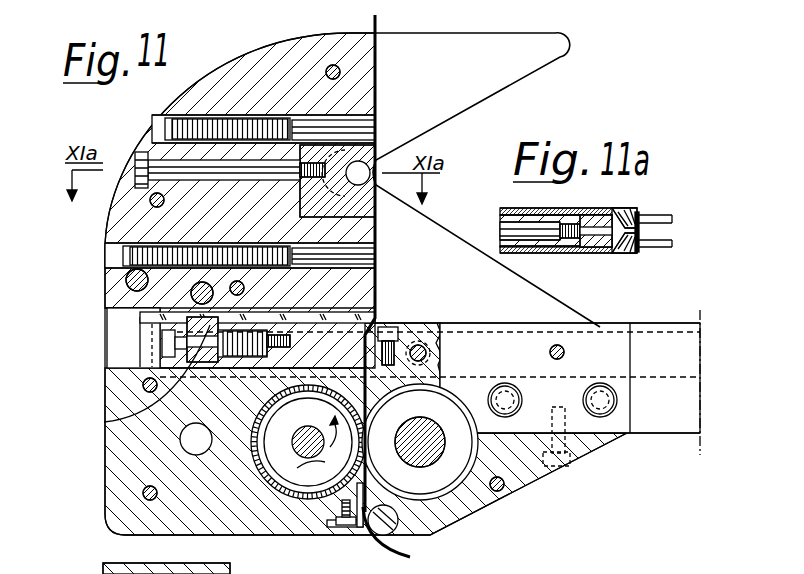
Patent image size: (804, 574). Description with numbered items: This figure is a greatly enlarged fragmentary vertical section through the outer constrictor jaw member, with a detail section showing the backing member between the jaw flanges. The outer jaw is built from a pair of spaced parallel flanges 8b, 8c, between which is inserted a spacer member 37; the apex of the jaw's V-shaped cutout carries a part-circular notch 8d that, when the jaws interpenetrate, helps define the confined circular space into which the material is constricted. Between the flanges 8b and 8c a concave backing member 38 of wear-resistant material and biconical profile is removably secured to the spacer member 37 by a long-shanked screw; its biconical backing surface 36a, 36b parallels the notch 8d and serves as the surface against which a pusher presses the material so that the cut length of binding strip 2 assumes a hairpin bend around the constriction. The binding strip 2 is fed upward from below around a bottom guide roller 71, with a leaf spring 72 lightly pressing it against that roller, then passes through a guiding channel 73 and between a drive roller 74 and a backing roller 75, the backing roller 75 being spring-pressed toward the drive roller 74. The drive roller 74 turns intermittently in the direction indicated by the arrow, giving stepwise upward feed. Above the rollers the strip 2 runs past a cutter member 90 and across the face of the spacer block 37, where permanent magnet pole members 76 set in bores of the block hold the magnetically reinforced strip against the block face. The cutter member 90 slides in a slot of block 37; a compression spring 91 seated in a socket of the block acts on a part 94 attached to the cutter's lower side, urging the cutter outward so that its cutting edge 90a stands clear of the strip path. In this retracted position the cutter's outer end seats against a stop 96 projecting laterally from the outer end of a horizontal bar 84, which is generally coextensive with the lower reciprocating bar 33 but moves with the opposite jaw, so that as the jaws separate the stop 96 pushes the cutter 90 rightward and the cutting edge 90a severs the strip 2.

In FIG. 11, the binding strip 2 is at (378, 20).
In FIG. 11A, the binding strip 2 is at (640, 232).
In FIG. 11A, the flange 8b is at (672, 220).
In FIG. 11A, the flange 8c is at (662, 246).
In FIG. 11, the part-circular notch 8d is at (375, 170).
In FIG. 11, the lower reciprocating bar 33 is at (667, 405).
In FIG. 11A, the biconical backing surface 36a is at (622, 253).
In FIG. 11A, the biconical backing surface 36b is at (622, 214).
In FIG. 11, the spacer member 37 is at (282, 83).
In FIG. 11A, the spacer member 37 is at (538, 240).
In FIG. 11, the concave backing member 38 is at (372, 214).
In FIG. 11A, the concave backing member 38 is at (597, 214).
In FIG. 11, the bottom guide roller 71 is at (393, 521).
In FIG. 11, the leaf spring 72 is at (330, 503).
In FIG. 11, the guiding channel 73 is at (347, 495).
In FIG. 11, the drive roller 74 is at (263, 498).
In FIG. 11, the backing roller 75 is at (506, 505).
In FIG. 11, the permanent magnet pole members 76 is at (350, 130).
In FIG. 11, the horizontal bar 84 is at (690, 377).
In FIG. 11, the cutter member 90 is at (338, 313).
In FIG. 11, the cutting edge 90a is at (378, 318).
In FIG. 11, the compression spring 91 is at (133, 308).
In FIG. 11, the part attached to the cutter 94 is at (104, 422).
In FIG. 11, the stop 96 is at (120, 350).